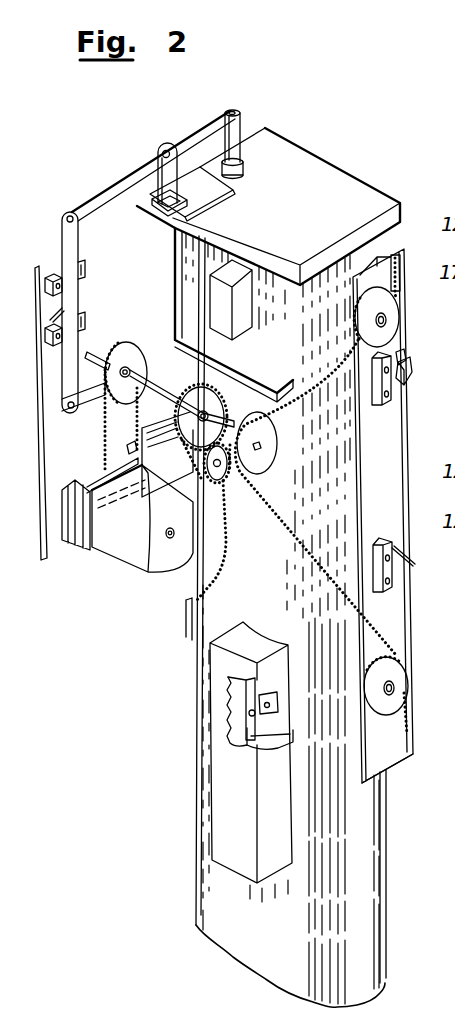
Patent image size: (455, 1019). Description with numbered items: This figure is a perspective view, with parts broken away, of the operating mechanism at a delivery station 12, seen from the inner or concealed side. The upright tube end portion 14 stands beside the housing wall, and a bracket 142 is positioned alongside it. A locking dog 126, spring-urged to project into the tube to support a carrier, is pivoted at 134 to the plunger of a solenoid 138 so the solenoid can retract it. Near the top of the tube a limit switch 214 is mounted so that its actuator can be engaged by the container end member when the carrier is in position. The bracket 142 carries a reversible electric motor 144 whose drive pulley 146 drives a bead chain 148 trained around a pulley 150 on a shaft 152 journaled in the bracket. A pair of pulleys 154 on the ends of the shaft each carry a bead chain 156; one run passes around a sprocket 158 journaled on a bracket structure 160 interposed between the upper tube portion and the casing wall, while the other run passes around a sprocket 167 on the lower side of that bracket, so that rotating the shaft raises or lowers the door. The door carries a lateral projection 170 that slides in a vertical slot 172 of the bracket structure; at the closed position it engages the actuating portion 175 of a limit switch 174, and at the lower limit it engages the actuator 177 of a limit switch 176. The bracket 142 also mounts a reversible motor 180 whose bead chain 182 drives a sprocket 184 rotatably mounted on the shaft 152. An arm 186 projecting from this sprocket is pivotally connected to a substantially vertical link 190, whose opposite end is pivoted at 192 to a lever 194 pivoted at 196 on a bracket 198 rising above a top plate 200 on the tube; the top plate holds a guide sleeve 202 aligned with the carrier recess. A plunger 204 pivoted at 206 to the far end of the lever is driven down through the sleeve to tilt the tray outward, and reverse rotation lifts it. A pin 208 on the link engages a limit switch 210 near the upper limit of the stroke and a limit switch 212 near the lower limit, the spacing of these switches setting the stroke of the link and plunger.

The lock assembly 12 is at (397, 768).
The tube end portion 14 is at (370, 942).
The locking dog 126 is at (262, 680).
The pivot 134 is at (249, 715).
The solenoid 138 is at (272, 733).
The bracket 142 is at (47, 556).
The reversible electric motor 144 is at (220, 481).
The drive pulley 146 is at (222, 470).
The bead chain 148 is at (196, 458).
The pulley 150 is at (205, 392).
The shaft 152 is at (158, 385).
The pulleys 154 is at (268, 457).
The bead chain 156 is at (313, 548).
The sprocket 158 is at (392, 308).
The bracket structure 160 is at (380, 262).
The sprocket 167 is at (400, 673).
The lateral projection 170 is at (404, 373).
The vertical slot 172 is at (403, 427).
The limit switch 174 is at (379, 405).
The actuating portion 175 is at (404, 355).
The limit switch 176 is at (380, 538).
The actuator 177 is at (414, 566).
The reversible motor 180 is at (130, 547).
The bead chain 182 is at (104, 462).
The sprocket 184 is at (125, 355).
The arm 186 is at (92, 400).
The link 190 is at (51, 297).
The pivot 192 is at (71, 211).
The lever 194 is at (120, 187).
The pivot 196 is at (163, 152).
The bracket 198 is at (170, 188).
The top plate 200 is at (348, 187).
The guide sleeve 202 is at (241, 170).
The plunger 204 is at (261, 114).
The pivot 206 is at (233, 111).
The pin 208 is at (58, 311).
The limit switch 210 is at (85, 264).
The limit switch 212 is at (85, 317).
The limit switch 214 is at (247, 308).